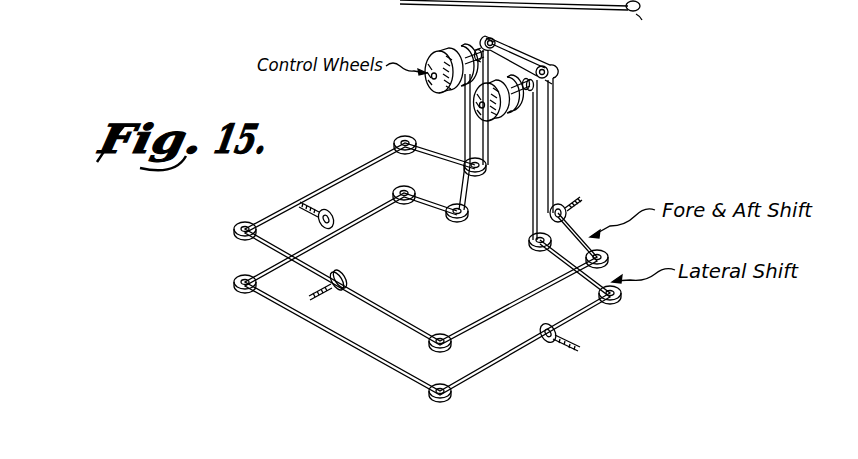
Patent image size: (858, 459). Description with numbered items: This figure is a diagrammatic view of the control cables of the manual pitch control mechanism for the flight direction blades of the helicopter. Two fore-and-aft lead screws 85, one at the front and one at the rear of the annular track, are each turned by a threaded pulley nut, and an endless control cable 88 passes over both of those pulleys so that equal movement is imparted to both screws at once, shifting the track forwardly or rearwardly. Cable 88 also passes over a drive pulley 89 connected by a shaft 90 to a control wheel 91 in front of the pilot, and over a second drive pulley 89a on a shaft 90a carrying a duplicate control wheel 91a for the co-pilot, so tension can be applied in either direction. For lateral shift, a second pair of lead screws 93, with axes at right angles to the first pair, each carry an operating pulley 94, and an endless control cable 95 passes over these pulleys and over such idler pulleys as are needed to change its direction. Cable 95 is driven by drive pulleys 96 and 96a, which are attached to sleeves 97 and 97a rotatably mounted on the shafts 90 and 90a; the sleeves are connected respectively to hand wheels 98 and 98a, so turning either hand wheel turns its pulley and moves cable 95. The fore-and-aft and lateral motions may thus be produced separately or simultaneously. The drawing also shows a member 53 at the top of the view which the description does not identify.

The control rod 53 is at (641, 5).
The lead screw 85 is at (581, 196).
The control cable 88 is at (554, 139).
The drive pulley 89 is at (553, 84).
The second drive pulley 89a is at (503, 40).
The shaft 90 is at (548, 70).
The shaft 90a is at (488, 38).
The control wheel 91 is at (486, 112).
The duplicate control wheel 91a is at (428, 82).
The lead screw 93 is at (313, 213).
The operating pulley 94 is at (337, 213).
The control cable 95 is at (353, 357).
The drive pulley 96 is at (243, 290).
The drive pulley 96a is at (476, 49).
The sleeve 97 is at (524, 80).
The sleeve 97a is at (460, 57).
The hand wheel 98 is at (509, 118).
The hand wheel 98a is at (434, 57).